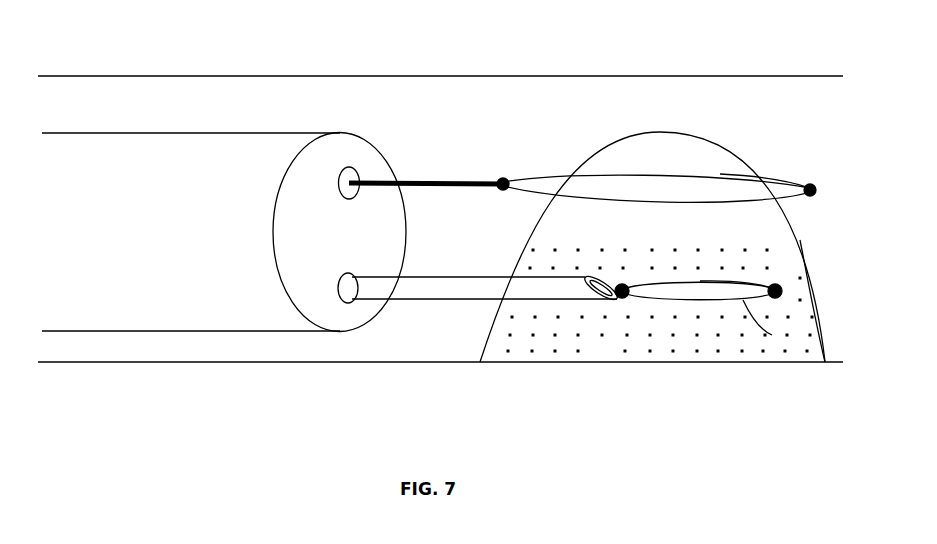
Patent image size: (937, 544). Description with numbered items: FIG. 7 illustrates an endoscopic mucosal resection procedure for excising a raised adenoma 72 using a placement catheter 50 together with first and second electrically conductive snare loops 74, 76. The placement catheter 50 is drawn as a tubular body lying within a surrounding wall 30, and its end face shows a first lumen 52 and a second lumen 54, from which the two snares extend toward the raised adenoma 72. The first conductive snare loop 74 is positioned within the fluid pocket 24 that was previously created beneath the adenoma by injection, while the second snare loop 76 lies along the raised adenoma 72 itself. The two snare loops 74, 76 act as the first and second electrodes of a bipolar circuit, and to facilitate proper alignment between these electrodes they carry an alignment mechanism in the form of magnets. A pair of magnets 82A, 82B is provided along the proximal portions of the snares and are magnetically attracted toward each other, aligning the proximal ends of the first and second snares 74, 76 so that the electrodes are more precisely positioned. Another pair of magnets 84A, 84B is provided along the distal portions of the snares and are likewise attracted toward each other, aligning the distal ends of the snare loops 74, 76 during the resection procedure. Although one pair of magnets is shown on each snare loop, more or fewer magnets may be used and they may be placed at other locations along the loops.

The body lumen wall 30 is at (606, 76).
The placement catheter 50 is at (175, 133).
The second lumen 54 is at (352, 168).
The first lumen 52 is at (352, 274).
The raised adenoma 72 is at (717, 141).
The second electrically conductive snare loop 76 is at (771, 175).
The magnet 82A is at (505, 178).
The magnet 84A is at (811, 185).
The magnet 82B is at (623, 285).
The magnet 84B is at (778, 285).
The first electrically conductive snare loop 74 is at (772, 335).
The fluid pocket 24 is at (612, 335).